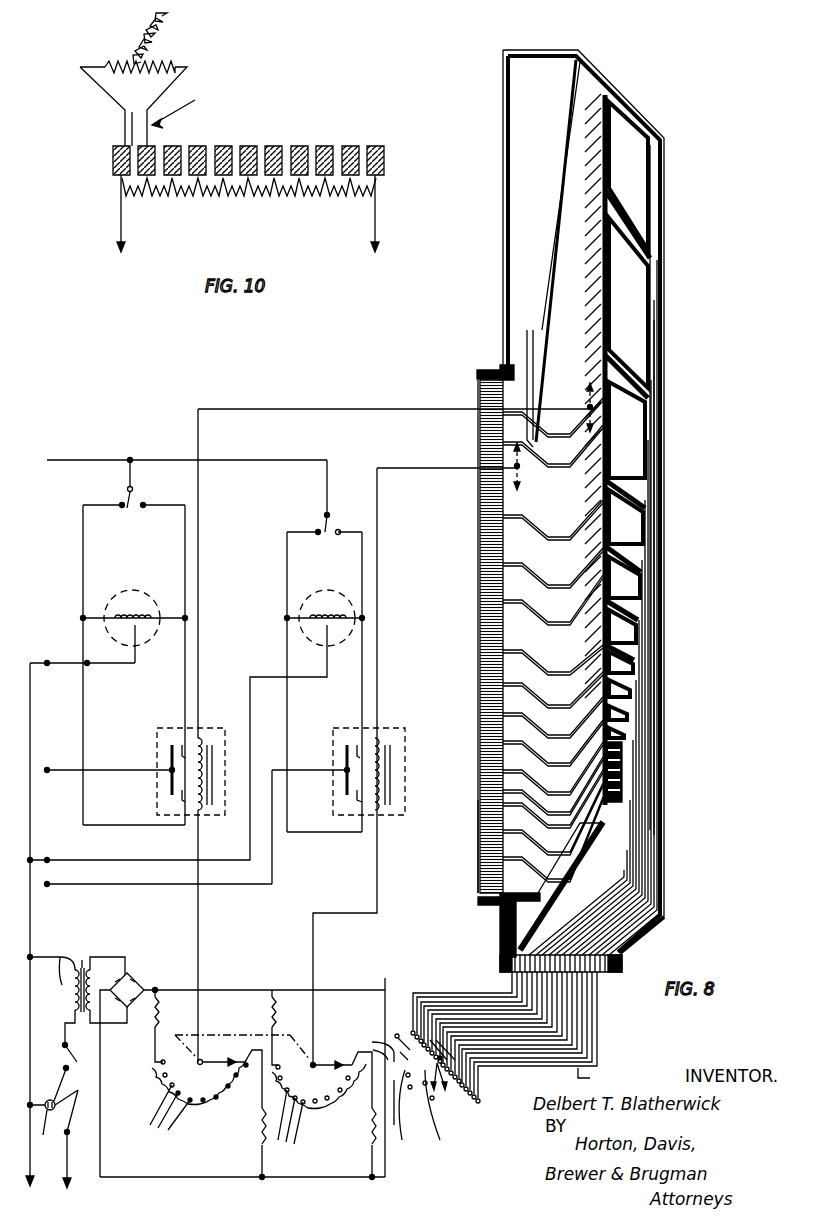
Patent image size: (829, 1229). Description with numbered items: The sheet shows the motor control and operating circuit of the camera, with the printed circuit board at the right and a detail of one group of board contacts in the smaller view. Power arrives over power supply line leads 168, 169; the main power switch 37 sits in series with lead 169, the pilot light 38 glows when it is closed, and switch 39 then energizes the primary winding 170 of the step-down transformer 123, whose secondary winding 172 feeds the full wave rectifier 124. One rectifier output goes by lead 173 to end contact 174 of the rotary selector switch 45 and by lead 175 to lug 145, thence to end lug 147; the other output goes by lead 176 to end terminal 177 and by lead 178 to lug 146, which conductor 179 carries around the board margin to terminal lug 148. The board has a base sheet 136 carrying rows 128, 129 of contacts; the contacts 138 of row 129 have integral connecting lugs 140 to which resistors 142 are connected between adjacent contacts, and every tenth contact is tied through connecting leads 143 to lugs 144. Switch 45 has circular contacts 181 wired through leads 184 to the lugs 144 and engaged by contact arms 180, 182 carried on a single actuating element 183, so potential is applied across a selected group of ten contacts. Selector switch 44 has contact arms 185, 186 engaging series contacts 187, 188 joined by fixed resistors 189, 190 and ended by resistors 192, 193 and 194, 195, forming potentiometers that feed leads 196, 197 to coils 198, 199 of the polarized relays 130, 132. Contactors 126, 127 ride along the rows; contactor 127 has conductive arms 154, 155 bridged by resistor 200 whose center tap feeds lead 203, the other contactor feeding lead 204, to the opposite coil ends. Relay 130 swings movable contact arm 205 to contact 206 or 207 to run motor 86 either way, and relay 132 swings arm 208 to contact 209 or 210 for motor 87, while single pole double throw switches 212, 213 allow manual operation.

In FIG. 10, the lead 203 is at (165, 22).
In FIG. 8, the lead 203 is at (199, 578).
In FIG. 10, the fixed resistor 200 is at (160, 62).
In FIG. 10, the conductive arm 155 is at (145, 112).
In FIG. 10, the contactor 127 is at (193, 110).
In FIG. 8, the contactor 127 is at (478, 470).
In FIG. 10, the conductive arm 154 is at (125, 120).
In FIG. 10, the contacts 138 is at (385, 160).
In FIG. 10, the resistors 142 is at (340, 198).
In FIG. 8, the resistors 142 is at (478, 856).
In FIG. 10, the connecting leads 143 is at (376, 232).
In FIG. 8, the connecting leads 143 is at (620, 790).
In FIG. 8, the row of contacts 128 is at (600, 70).
In FIG. 8, the conductor 179 is at (640, 145).
In FIG. 8, the contactor 126 is at (527, 400).
In FIG. 8, the row of contacts 129 is at (500, 372).
In FIG. 8, the terminal lug 148 is at (477, 360).
In FIG. 8, the connecting lugs 140 is at (478, 668).
In FIG. 8, the end lug 147 is at (488, 905).
In FIG. 8, the connecting lug 145 is at (500, 955).
In FIG. 8, the lead 175 is at (500, 968).
In FIG. 8, the base sheet 136 is at (625, 958).
In FIG. 8, the connecting lugs 144 is at (605, 975).
In FIG. 8, the connecting lug 146 is at (630, 975).
In FIG. 8, the leads 184 is at (598, 1055).
In FIG. 8, the lead 178 is at (603, 1078).
In FIG. 8, the rotary selector switch 45 is at (410, 1047).
In FIG. 8, the contacts 181 is at (444, 1046).
In FIG. 8, the contact arm 182 is at (454, 1075).
In FIG. 8, the end terminal 177 is at (409, 1112).
In FIG. 8, the contact arm 180 is at (451, 1111).
In FIG. 8, the actuating element 183 is at (369, 1078).
In FIG. 8, the lead 204 is at (378, 590).
In FIG. 8, the single pole double throw switch 212 is at (134, 495).
In FIG. 8, the single pole double throw switch 213 is at (325, 516).
In FIG. 8, the electric motor 86 is at (116, 598).
In FIG. 8, the electric motor 87 is at (313, 598).
In FIG. 8, the polarized relay 130 is at (208, 732).
In FIG. 8, the polarized relay 132 is at (390, 722).
In FIG. 8, the movable contact arm 205 is at (168, 790).
In FIG. 8, the contact 206 is at (180, 745).
In FIG. 8, the contact 207 is at (182, 802).
In FIG. 8, the movable contact arm 208 is at (343, 790).
In FIG. 8, the contact 209 is at (356, 745).
In FIG. 8, the contact 210 is at (357, 802).
In FIG. 8, the relay coil 198 is at (212, 805).
In FIG. 8, the relay coil 199 is at (392, 770).
In FIG. 8, the lead 197 is at (377, 900).
In FIG. 8, the lead 196 is at (200, 916).
In FIG. 8, the power supply line lead 168 is at (50, 935).
In FIG. 8, the power supply line lead 169 is at (72, 1185).
In FIG. 8, the transformer 123 is at (82, 958).
In FIG. 8, the primary winding 170 is at (70, 970).
In FIG. 8, the secondary winding 172 is at (92, 965).
In FIG. 8, the full wave rectifier 124 is at (132, 972).
In FIG. 8, the lead 173 is at (222, 990).
In FIG. 8, the end contact 174 is at (385, 978).
In FIG. 8, the lead 176 is at (208, 1180).
In FIG. 8, the switch 39 is at (88, 1045).
In FIG. 8, the main power switch 37 is at (80, 1097).
In FIG. 8, the pilot light 38 is at (49, 1133).
In FIG. 8, the resistor 192 is at (172, 1027).
In FIG. 8, the resistor 194 is at (290, 1029).
In FIG. 8, the contact arm 186 is at (315, 1060).
In FIG. 8, the selector switch 44 is at (235, 1035).
In FIG. 8, the contact arm 185 is at (230, 1071).
In FIG. 8, the contacts 187 is at (200, 1082).
In FIG. 8, the contacts 188 is at (322, 1080).
In FIG. 8, the fixed resistors 189 is at (161, 1112).
In FIG. 8, the fixed resistors 190 is at (294, 1123).
In FIG. 8, the resistor 193 is at (258, 1120).
In FIG. 8, the resistor 195 is at (370, 1125).